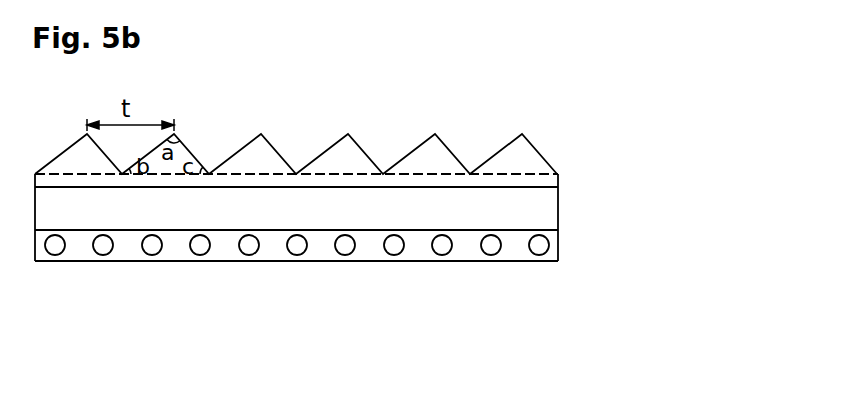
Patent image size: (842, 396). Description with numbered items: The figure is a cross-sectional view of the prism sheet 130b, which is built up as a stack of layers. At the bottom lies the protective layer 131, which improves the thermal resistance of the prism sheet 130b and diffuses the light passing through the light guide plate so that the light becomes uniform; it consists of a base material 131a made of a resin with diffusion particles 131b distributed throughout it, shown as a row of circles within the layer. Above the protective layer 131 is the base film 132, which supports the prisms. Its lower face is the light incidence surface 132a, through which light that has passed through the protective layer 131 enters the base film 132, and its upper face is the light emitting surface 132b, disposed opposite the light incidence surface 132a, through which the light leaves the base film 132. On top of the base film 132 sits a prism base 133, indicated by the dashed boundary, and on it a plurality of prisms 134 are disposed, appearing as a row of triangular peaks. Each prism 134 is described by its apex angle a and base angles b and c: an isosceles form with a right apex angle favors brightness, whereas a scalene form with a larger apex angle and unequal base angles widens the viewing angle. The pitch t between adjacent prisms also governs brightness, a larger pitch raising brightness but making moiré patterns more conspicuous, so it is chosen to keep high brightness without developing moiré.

The prism sheet 130b is at (338, 107).
The prism 134 is at (530, 143).
The prism base 133 is at (558, 177).
The base film 132 is at (558, 208).
The light incidence surface 132a is at (132, 230).
The light emitting surface 132b is at (312, 187).
The protective layer 131 is at (558, 246).
The base material 131a is at (463, 253).
The diffusion particles 131b is at (491, 250).